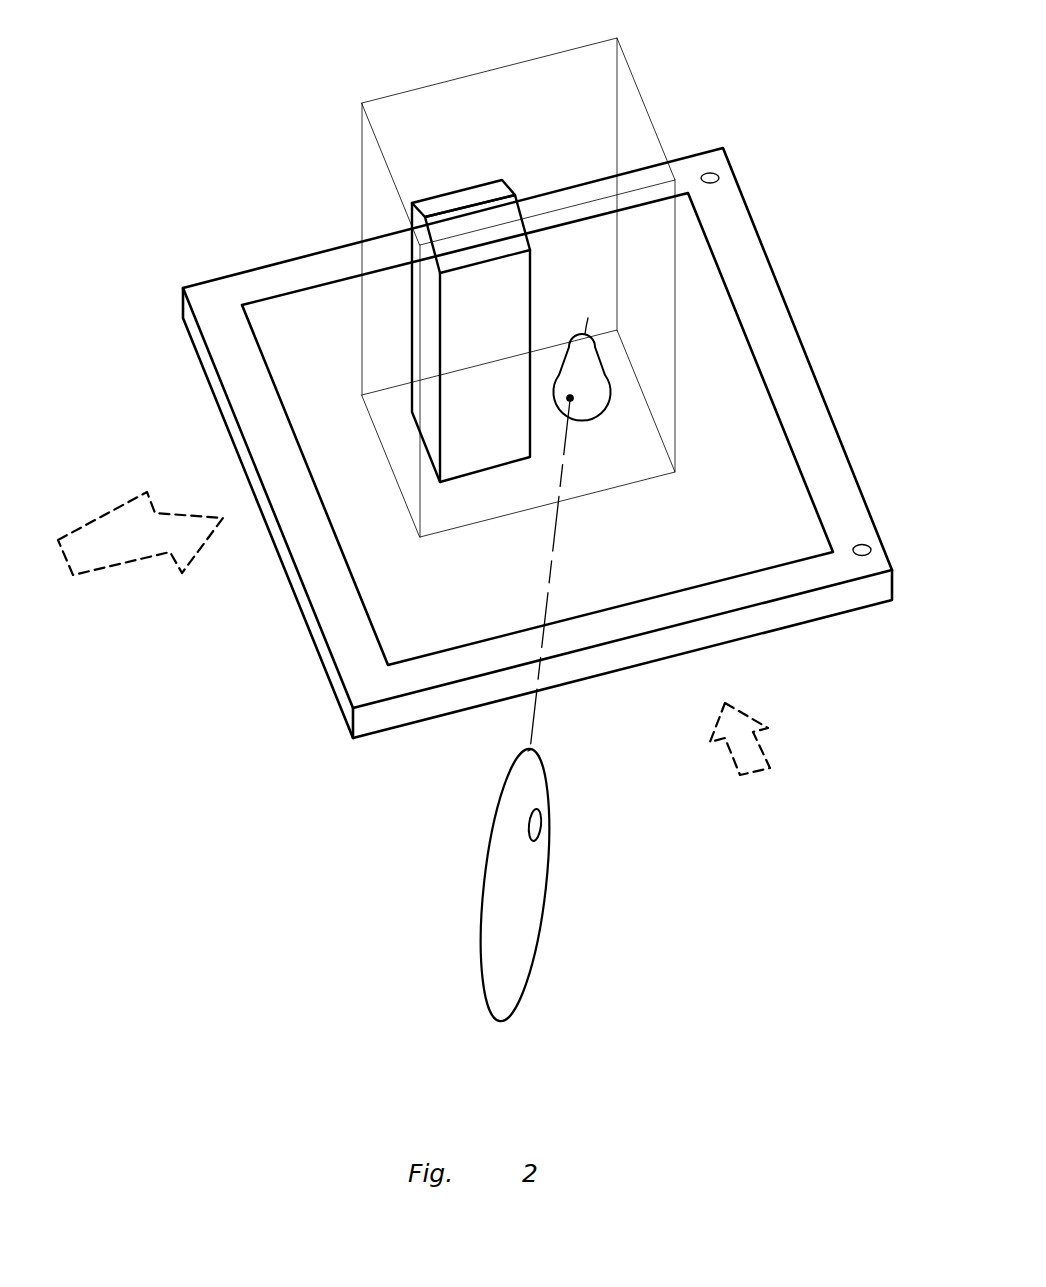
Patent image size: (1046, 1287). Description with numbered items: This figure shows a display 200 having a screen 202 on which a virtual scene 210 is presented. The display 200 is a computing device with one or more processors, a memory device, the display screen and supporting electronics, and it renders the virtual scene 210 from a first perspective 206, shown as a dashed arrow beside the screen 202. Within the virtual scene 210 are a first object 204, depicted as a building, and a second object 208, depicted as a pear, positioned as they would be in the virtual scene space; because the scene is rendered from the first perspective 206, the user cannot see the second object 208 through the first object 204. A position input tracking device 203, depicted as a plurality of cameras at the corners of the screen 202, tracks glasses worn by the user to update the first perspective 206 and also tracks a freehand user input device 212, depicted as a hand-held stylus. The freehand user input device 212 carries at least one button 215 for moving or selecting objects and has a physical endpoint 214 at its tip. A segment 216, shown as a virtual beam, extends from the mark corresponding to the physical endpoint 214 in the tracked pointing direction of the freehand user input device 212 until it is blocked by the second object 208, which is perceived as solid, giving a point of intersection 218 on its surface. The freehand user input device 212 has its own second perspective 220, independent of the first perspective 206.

The display 200 is at (168, 229).
The screen 202 is at (316, 320).
The position input tracking device 203 is at (712, 173).
The first object 204 is at (468, 188).
The first perspective 206 is at (103, 568).
The second object 208 is at (570, 382).
The virtual scene 210 is at (485, 72).
The freehand user input device 212 is at (545, 898).
The physical endpoint 214 is at (533, 750).
The button 215 is at (543, 823).
The segment 216 is at (557, 543).
The point of intersection 218 is at (567, 398).
The second perspective 220 is at (760, 747).